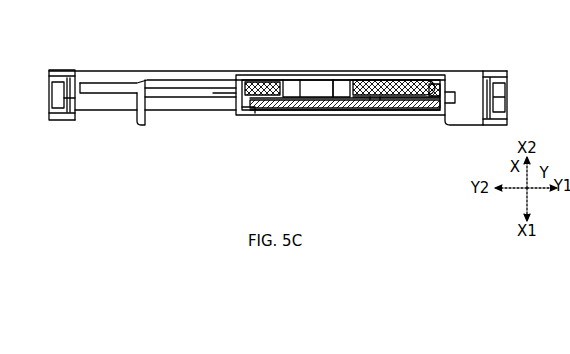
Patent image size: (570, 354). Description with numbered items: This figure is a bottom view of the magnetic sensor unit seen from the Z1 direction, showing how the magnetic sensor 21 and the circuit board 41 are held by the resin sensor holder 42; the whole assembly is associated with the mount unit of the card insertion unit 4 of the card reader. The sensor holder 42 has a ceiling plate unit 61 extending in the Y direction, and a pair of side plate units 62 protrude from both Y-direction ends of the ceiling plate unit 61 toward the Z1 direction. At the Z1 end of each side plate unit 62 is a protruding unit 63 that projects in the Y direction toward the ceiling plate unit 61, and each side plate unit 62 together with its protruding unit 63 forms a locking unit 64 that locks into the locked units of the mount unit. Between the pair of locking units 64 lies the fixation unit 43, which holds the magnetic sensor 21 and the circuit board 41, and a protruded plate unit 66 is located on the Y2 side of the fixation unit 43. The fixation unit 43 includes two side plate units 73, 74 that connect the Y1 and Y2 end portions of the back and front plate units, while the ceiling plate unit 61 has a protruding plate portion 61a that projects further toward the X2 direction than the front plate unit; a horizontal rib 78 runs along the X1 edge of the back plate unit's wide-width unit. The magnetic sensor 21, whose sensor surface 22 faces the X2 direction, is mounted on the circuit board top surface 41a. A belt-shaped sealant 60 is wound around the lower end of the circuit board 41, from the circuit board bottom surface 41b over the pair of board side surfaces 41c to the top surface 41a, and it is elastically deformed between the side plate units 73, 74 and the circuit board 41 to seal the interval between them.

The cover member 4 is at (44, 102).
The magnetic sensor 21 is at (342, 83).
The sensor surface 22 is at (313, 88).
The circuit board 41 is at (410, 82).
The circuit board top surface 41a is at (380, 85).
The circuit board bottom surface 41b is at (400, 107).
The board side surfaces 41c is at (252, 96).
The sensor holder 42 is at (118, 107).
The fixation unit 43 is at (258, 117).
The sealant 60 is at (377, 106).
The ceiling plate unit 61 is at (110, 75).
The protruding plate portion 61a is at (288, 73).
The side plate units 62 is at (46, 101).
The protruding unit 63 is at (72, 110).
The locking unit 64 is at (512, 106).
The protruded plate unit 66 is at (123, 92).
The side plate unit 73 is at (446, 106).
The side plate unit 74 is at (236, 82).
The horizontal rib 78 is at (304, 115).